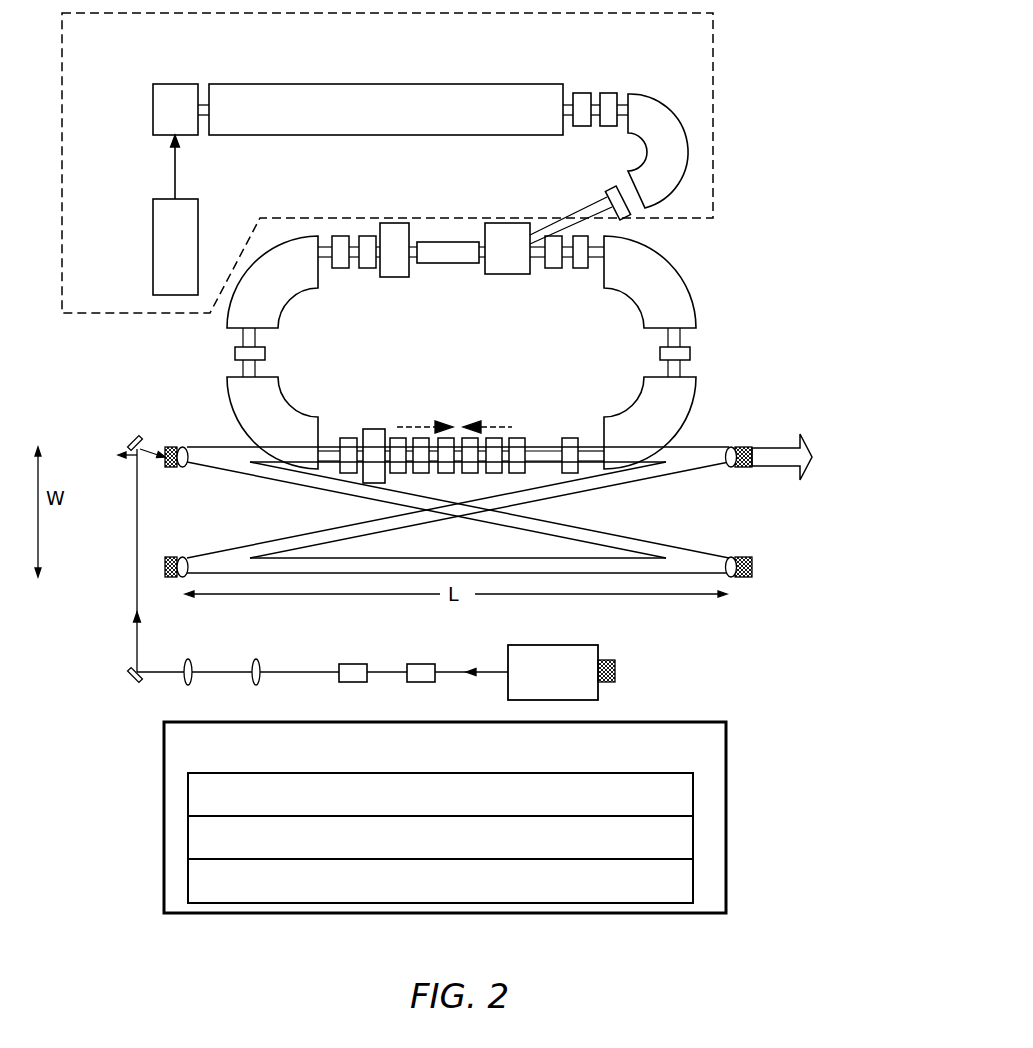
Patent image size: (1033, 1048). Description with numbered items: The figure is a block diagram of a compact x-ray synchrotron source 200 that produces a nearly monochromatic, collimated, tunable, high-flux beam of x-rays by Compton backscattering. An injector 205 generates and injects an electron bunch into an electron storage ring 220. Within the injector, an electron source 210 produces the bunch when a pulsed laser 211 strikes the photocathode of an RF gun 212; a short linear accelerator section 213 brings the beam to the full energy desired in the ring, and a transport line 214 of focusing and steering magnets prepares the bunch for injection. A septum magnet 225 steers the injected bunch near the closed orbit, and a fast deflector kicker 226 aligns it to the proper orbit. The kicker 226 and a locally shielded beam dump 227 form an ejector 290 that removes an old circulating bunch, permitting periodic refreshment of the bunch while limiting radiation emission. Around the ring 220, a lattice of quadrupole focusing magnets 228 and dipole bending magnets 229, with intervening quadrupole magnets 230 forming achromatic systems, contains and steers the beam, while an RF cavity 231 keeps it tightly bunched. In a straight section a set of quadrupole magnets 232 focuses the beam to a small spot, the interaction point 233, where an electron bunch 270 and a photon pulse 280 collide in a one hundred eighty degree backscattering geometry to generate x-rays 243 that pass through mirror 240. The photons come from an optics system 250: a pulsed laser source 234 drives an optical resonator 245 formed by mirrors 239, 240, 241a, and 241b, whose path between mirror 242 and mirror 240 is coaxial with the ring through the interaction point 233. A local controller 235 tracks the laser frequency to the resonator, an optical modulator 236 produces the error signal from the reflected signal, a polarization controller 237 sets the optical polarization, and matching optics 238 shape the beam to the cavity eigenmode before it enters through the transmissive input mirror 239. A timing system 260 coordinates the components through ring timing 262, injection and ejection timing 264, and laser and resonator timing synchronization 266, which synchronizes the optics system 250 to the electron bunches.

The x-ray synchrotron source 200 is at (387, 163).
The injector 205 is at (678, 135).
The electron source 210 is at (142, 84).
The pulsed laser 211 is at (209, 215).
The RF gun 212 is at (195, 90).
The linear accelerator section 213 is at (386, 90).
The transport line 214 is at (573, 209).
The electron storage ring 220 is at (710, 237).
The septum magnet 225 is at (530, 271).
The kicker 226 is at (459, 270).
The shielded beam dump 227 is at (424, 273).
The quadrupole focusing magnets 228 is at (469, 354).
The dipole bending magnets 229 is at (461, 352).
The quadrupole magnet 230 is at (462, 360).
The RF cavity 231 is at (336, 471).
The set of quadrupole magnets 232 is at (458, 510).
The interaction point 233 is at (469, 417).
The pulsed laser source 234 is at (575, 655).
The local controller 235 is at (648, 661).
The optical modulator 236 is at (451, 655).
The polarization controller 237 is at (379, 654).
The matching optics 238 is at (318, 655).
The input mirror 239 is at (154, 429).
The mirror 240 is at (761, 430).
The mirror 241a is at (210, 548).
The mirror 241b is at (768, 546).
The mirror 242 is at (116, 539).
The x-rays 243 is at (805, 437).
The optical resonator 245 is at (808, 433).
The optics system 250 is at (120, 433).
The timing system 260 is at (512, 838).
The ring timing 262 is at (395, 792).
The injection and ejection timing 264 is at (395, 838).
The laser and resonator timing synchronization 266 is at (383, 876).
The electron bunch 270 is at (526, 474).
The photon pulse 280 is at (486, 412).
The ejector 290 is at (480, 220).